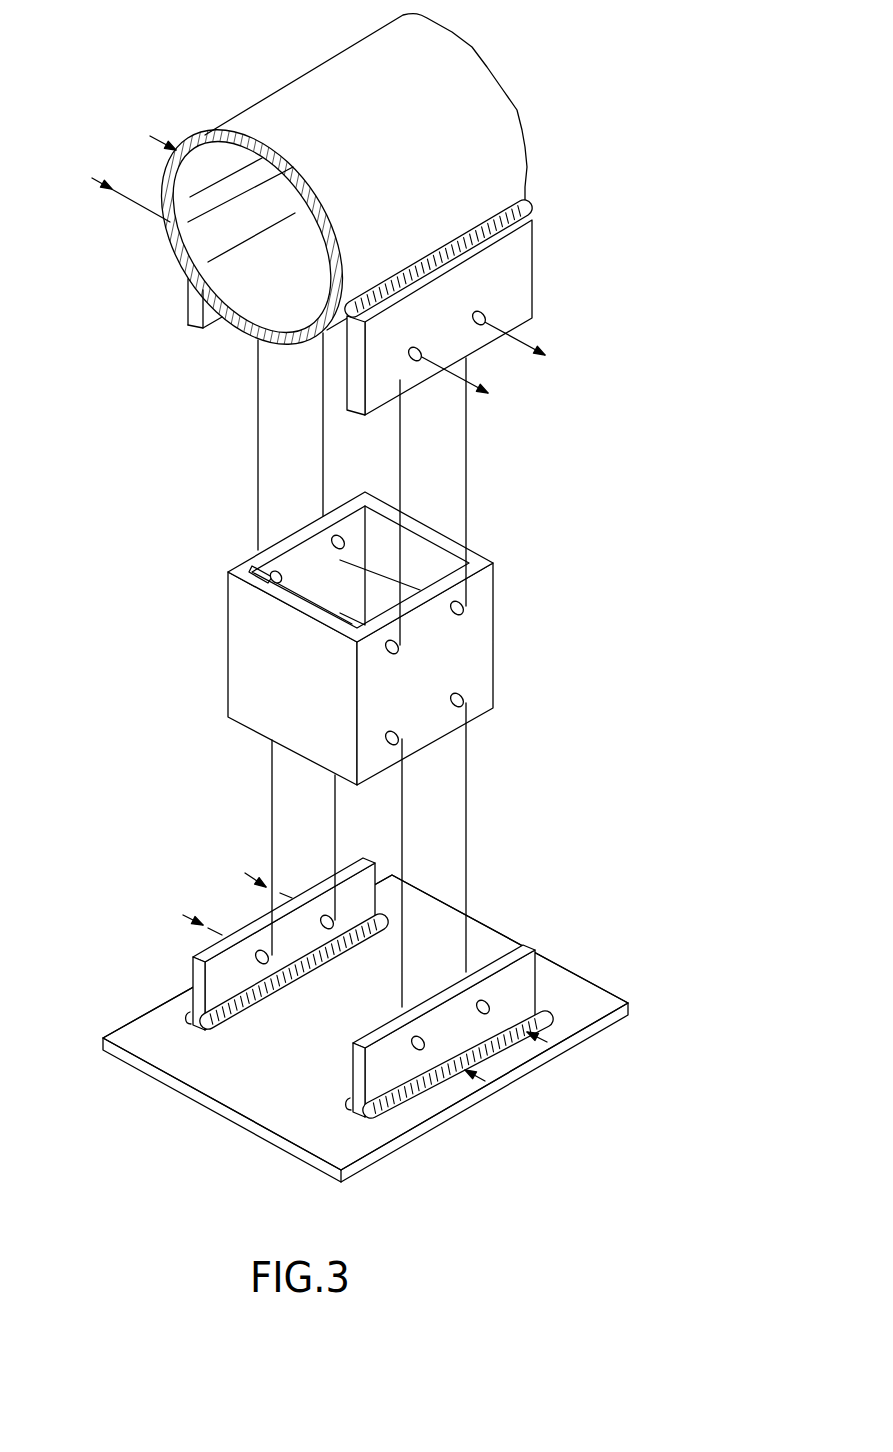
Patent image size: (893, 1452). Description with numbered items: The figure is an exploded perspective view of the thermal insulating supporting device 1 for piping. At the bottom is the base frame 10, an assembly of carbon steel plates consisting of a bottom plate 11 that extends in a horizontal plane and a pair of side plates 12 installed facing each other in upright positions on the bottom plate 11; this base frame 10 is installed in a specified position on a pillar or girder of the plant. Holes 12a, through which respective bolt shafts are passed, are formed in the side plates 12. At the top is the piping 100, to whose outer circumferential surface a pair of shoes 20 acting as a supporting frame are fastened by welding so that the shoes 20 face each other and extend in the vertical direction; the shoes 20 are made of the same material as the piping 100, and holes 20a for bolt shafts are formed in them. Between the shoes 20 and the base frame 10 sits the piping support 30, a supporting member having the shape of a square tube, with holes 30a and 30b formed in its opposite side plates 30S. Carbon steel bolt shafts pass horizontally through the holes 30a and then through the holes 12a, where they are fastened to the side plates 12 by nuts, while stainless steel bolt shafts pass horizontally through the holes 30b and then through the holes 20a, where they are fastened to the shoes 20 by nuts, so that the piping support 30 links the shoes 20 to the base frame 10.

The thermal insulating supporting device 1 is at (175, 630).
The base frame 10 is at (206, 1104).
The bottom plate 11 is at (162, 1043).
The side plates 12 is at (203, 950).
The holes 12a is at (327, 922).
The shoes 20 is at (540, 270).
The holes 20a is at (420, 355).
The piping support 30 is at (272, 666).
The side plates 30S is at (300, 528).
The holes 30a is at (395, 740).
The holes 30b is at (276, 576).
The piping 100 is at (508, 68).